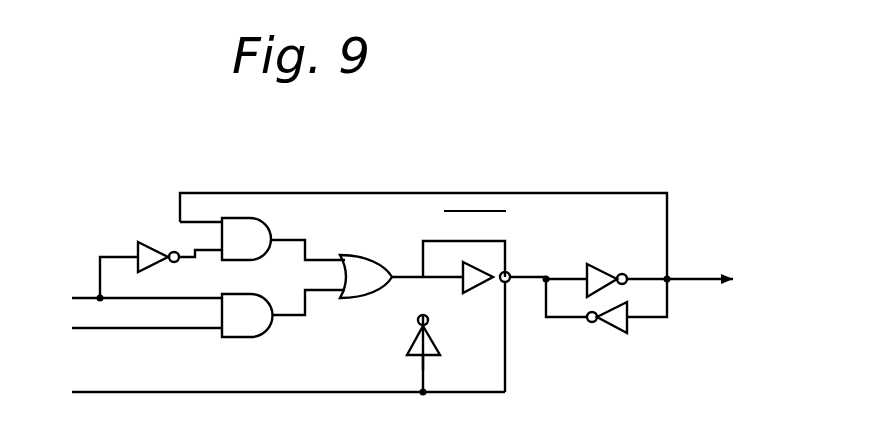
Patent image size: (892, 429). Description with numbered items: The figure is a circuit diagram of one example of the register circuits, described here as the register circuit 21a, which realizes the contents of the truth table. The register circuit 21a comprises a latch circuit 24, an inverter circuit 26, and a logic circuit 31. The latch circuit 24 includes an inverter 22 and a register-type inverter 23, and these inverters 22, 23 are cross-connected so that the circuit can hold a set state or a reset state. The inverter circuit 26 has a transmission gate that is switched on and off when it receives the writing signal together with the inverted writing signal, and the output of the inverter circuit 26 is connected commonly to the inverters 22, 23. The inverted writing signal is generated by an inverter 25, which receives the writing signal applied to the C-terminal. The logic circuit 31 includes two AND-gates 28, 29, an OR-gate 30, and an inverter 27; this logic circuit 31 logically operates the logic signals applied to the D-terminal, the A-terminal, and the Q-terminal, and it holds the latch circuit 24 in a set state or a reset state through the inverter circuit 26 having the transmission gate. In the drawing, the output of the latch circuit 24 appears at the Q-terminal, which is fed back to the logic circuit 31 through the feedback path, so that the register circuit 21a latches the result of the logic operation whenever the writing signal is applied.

The register circuit 21a is at (494, 150).
The inverter 22 is at (604, 265).
The register-type inverter 23 is at (607, 334).
The latch circuit 24 is at (661, 365).
The inverter 25 is at (405, 337).
The inverter circuit 26 is at (475, 293).
The inverter 27 is at (146, 240).
The AND-gate 28 is at (270, 222).
The AND-gate 29 is at (243, 337).
The OR-gate 30 is at (372, 255).
The logic circuit 31 is at (212, 182).